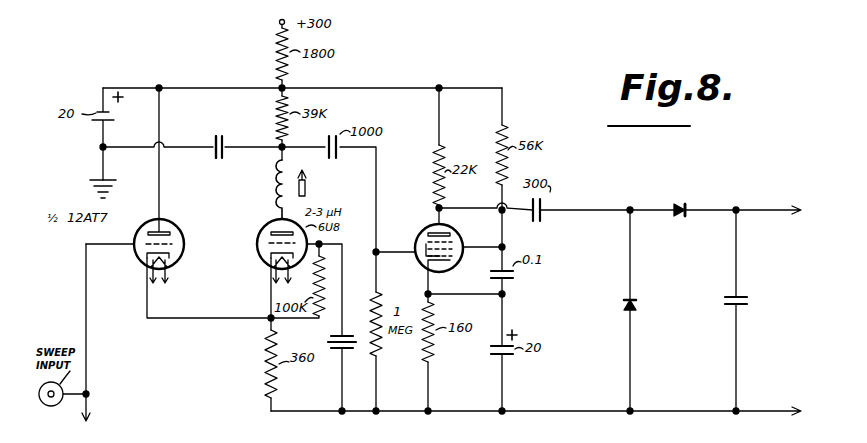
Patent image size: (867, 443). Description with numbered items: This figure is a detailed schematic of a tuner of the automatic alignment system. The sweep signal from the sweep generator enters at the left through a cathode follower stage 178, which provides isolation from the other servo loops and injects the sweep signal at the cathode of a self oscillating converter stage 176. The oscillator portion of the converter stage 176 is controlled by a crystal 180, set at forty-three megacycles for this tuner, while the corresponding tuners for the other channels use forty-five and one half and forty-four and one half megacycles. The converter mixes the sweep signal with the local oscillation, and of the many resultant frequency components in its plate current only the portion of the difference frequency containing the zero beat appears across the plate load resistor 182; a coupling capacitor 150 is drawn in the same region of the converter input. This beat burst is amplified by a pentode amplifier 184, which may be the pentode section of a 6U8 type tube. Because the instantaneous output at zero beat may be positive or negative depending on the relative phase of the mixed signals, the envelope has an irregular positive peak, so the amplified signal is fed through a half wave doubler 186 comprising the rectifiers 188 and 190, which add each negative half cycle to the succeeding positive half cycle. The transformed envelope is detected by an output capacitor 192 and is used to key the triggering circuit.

The coupling capacitor 150 is at (216, 136).
The self oscillating converter stage 176 is at (244, 223).
The cathode follower stage 178 is at (144, 199).
The crystal 180 is at (346, 336).
The plate load resistor 182 is at (256, 133).
The pentode amplifier 184 is at (416, 225).
The half wave doubler 186 is at (682, 181).
The rectifier 188 is at (682, 217).
The rectifier 190 is at (634, 304).
The output capacitor 192 is at (741, 300).